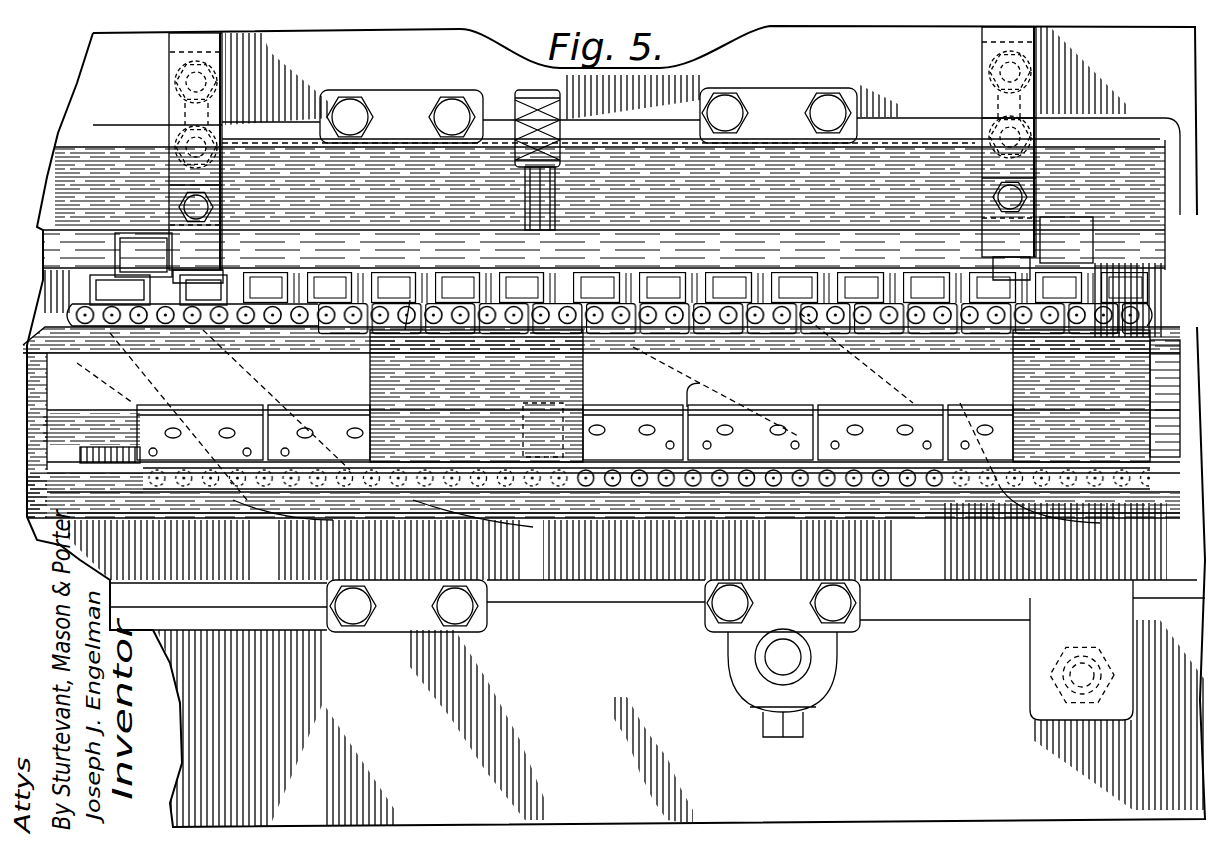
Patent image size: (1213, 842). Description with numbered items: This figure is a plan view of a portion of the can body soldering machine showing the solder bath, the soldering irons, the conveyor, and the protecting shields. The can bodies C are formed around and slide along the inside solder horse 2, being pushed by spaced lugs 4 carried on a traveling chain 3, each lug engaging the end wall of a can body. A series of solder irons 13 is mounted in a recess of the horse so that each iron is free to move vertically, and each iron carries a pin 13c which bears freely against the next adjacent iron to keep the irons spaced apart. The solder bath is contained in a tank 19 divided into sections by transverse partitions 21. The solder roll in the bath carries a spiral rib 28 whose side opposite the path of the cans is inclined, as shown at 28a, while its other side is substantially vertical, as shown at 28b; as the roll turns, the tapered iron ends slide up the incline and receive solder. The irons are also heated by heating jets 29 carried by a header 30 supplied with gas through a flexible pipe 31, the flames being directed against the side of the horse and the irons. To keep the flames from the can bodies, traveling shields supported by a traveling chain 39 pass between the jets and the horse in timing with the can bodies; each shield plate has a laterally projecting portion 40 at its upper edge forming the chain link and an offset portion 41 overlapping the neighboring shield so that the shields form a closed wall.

The inside solder horse 2 is at (601, 416).
The traveling chain 3 is at (710, 475).
The spaced lugs 4 is at (620, 447).
The solder irons 13 is at (957, 403).
The pin 13c is at (687, 407).
The tank 19 is at (547, 590).
The transverse partitions 21 is at (860, 580).
The spiral rib 28 is at (1053, 503).
The inclined side of spiral rib 28a is at (900, 540).
The vertical side of spiral rib 28b is at (1080, 500).
The heating jets 29 is at (407, 300).
The header 30 is at (760, 290).
The pipe 31 is at (537, 98).
The traveling chain 39 is at (255, 300).
The laterally projecting portion 40 is at (507, 317).
The offset portion 41 is at (453, 300).
The can bodies C is at (1013, 370).